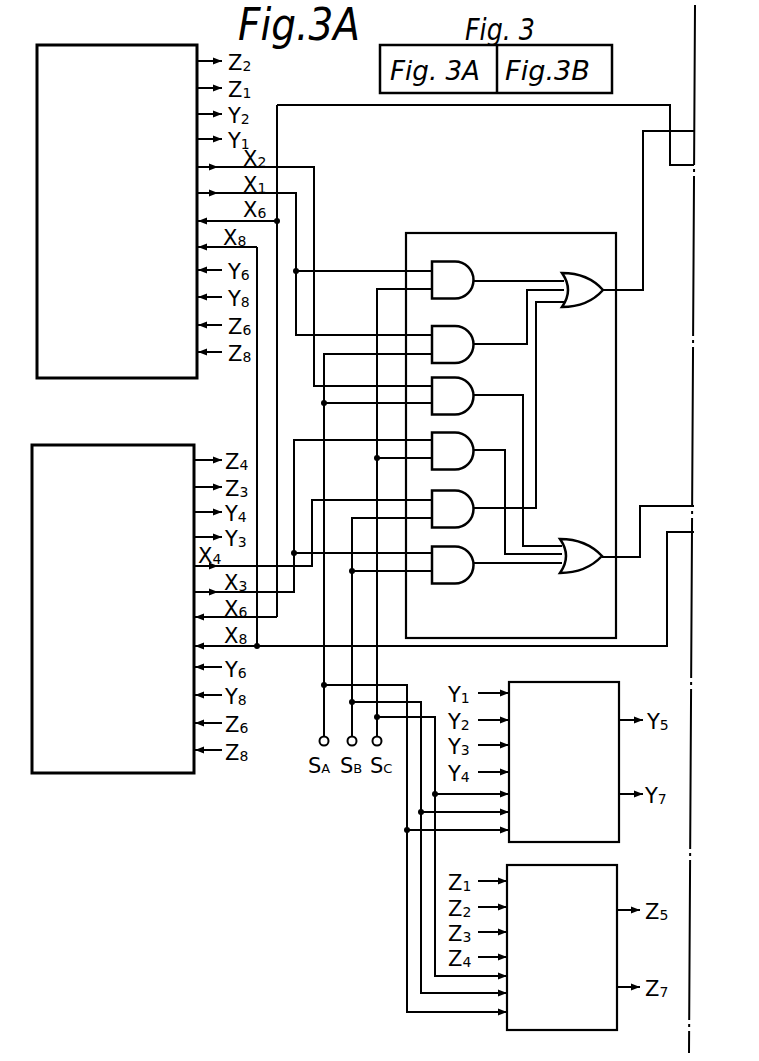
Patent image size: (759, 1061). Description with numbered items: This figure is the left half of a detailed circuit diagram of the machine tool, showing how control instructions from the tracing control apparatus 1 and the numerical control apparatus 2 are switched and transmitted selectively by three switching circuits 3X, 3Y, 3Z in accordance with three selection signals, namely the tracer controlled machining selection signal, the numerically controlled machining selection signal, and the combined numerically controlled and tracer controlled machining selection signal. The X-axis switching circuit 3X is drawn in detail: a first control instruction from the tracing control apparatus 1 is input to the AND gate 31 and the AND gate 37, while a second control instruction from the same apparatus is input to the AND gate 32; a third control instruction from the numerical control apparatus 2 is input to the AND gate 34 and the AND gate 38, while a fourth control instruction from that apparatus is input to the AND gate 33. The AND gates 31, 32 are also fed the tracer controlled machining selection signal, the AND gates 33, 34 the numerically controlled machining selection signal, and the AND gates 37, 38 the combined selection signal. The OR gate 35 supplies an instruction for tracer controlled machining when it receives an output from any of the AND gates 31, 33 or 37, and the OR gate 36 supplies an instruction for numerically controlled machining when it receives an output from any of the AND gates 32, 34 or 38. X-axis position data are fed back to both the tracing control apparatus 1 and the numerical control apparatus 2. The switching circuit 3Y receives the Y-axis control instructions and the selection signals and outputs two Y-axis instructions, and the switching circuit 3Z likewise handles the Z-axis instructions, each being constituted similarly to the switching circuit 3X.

The tracing control apparatus 1 is at (141, 26).
The numerical control apparatus 2 is at (131, 445).
The switching circuit 3X is at (616, 616).
The switching circuit 3Y is at (620, 835).
The switching circuit 3Z is at (618, 1015).
The AND gate 31 is at (456, 330).
The AND gate 32 is at (458, 383).
The AND gate 33 is at (462, 493).
The AND gate 34 is at (466, 557).
The OR gate 35 is at (582, 308).
The OR gate 36 is at (583, 540).
The AND gate 37 is at (456, 267).
The AND gate 38 is at (458, 437).